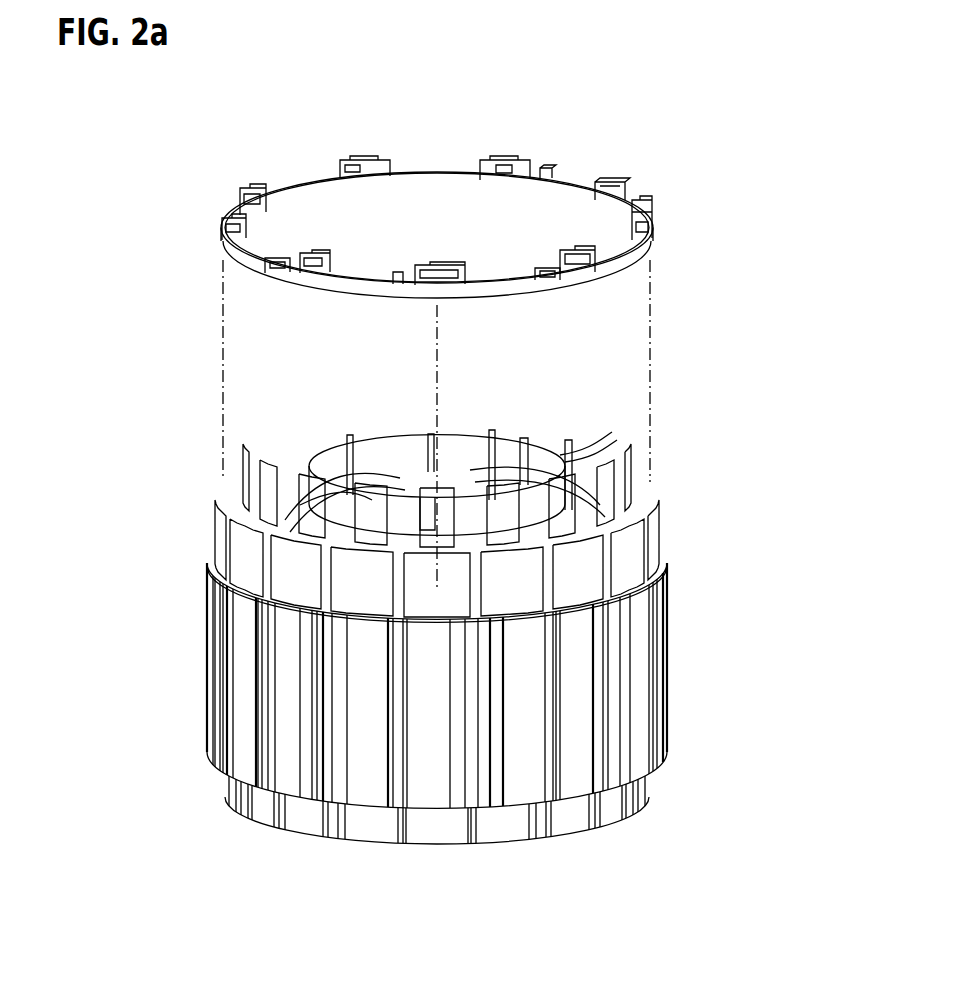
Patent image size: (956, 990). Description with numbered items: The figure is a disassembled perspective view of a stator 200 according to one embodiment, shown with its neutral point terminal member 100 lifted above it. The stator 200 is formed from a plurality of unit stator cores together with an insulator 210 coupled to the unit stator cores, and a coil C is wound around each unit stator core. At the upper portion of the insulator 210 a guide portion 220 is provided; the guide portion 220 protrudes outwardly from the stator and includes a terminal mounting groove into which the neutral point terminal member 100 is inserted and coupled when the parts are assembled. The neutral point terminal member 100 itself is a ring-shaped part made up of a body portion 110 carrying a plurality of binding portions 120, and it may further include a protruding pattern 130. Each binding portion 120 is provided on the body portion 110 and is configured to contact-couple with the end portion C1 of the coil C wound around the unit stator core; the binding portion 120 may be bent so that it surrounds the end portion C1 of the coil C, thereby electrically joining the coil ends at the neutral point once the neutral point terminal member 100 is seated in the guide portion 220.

The neutral point terminal member 100 is at (203, 232).
The body portion 110 is at (437, 170).
The binding portion 120 is at (603, 182).
The protruding pattern 130 is at (546, 172).
The stator 200 is at (187, 631).
The insulator 210 is at (517, 455).
The guide portion 220 is at (630, 562).
The coil C is at (540, 490).
The end portion of the coil C1 is at (605, 440).